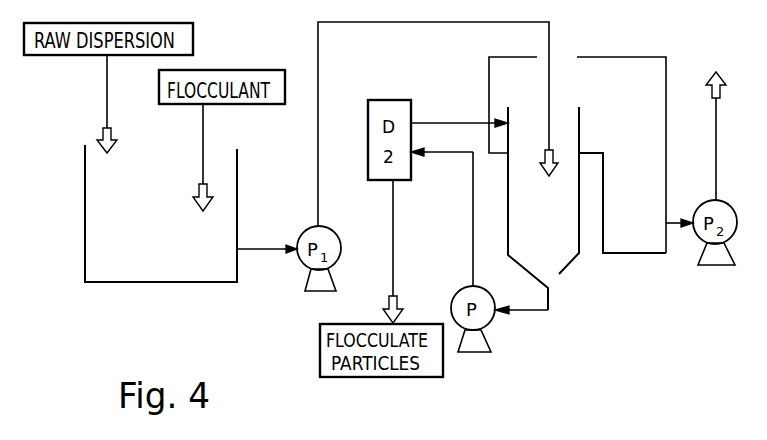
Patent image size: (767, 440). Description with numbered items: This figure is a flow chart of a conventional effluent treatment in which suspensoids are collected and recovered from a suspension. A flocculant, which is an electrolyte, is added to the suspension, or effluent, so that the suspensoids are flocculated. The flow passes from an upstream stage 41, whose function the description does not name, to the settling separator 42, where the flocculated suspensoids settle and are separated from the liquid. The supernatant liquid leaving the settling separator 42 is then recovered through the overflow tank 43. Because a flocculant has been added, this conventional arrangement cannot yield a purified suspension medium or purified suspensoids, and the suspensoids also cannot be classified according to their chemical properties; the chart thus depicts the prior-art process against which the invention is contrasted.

The pH-adjusting tank 41 is at (84, 240).
The settling separator 42 is at (562, 277).
The overflow tank 43 is at (644, 254).